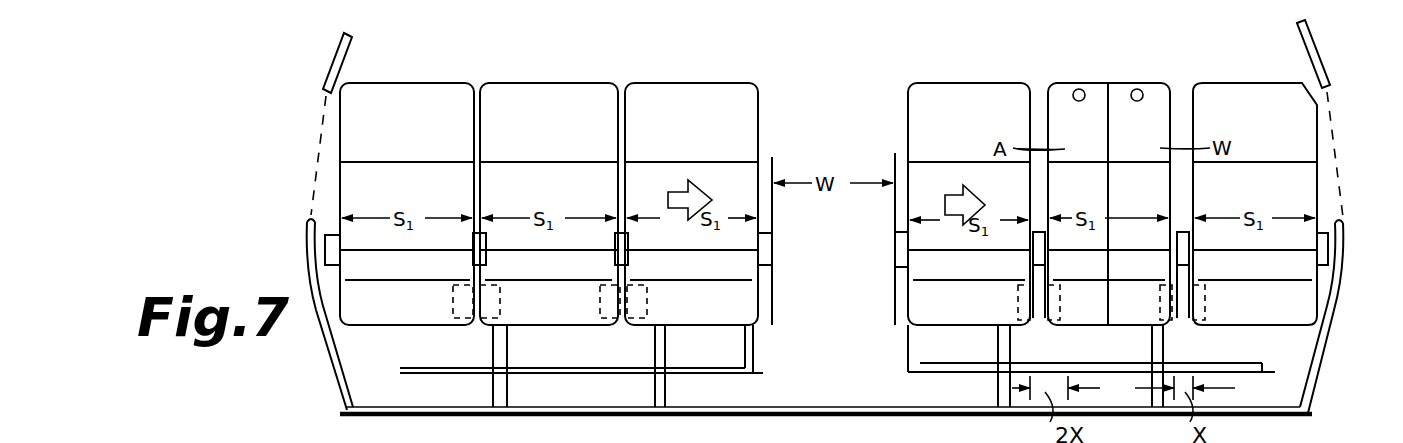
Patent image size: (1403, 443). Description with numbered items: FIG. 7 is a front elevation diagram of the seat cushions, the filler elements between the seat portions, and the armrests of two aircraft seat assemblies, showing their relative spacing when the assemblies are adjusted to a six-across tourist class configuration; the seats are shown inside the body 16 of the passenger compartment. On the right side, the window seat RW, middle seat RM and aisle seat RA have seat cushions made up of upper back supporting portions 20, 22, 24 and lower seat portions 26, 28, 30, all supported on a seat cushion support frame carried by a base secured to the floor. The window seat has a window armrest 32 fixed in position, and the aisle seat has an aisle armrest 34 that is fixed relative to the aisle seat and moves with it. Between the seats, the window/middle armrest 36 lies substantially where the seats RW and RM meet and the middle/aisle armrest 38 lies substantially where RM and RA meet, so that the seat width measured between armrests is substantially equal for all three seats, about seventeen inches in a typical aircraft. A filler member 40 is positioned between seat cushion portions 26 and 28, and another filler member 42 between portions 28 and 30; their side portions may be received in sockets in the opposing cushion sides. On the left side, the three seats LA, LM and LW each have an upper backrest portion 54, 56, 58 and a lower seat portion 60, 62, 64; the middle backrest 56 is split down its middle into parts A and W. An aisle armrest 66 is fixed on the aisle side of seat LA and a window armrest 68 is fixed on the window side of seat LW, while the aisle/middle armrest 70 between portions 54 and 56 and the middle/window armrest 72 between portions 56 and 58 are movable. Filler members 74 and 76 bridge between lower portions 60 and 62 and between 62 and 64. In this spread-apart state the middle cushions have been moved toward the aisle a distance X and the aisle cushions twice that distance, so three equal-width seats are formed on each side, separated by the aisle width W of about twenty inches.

The vehicle body 16 is at (836, 300).
The upper back supporting portion 20 is at (345, 118).
The upper back supporting portion 22 is at (505, 88).
The upper back supporting portion 24 is at (752, 100).
The lower seat portion 26 is at (390, 318).
The lower seat portion 28 is at (540, 318).
The lower seat portion 30 is at (713, 345).
The window armrest 32 is at (328, 250).
The aisle side armrest 34 is at (770, 245).
The window/middle armrest 36 is at (472, 258).
The middle/aisle armrest 38 is at (614, 258).
The filler member 40 is at (466, 308).
The filler member 42 is at (637, 310).
The upper backrest portion 54 is at (912, 116).
The upper backrest portion 56 is at (1062, 92).
The upper backrest portion 58 is at (1297, 112).
The lower seat portion 60 is at (953, 310).
The lower seat portion 62 is at (1104, 313).
The lower seat portion 64 is at (1253, 310).
The aisle armrest 66 is at (897, 254).
The window armrest 68 is at (1320, 252).
The aisle/middle armrest 70 is at (1034, 258).
The middle/window armrest 72 is at (1180, 258).
The filler member 74 is at (1036, 314).
The filler member 76 is at (1180, 312).